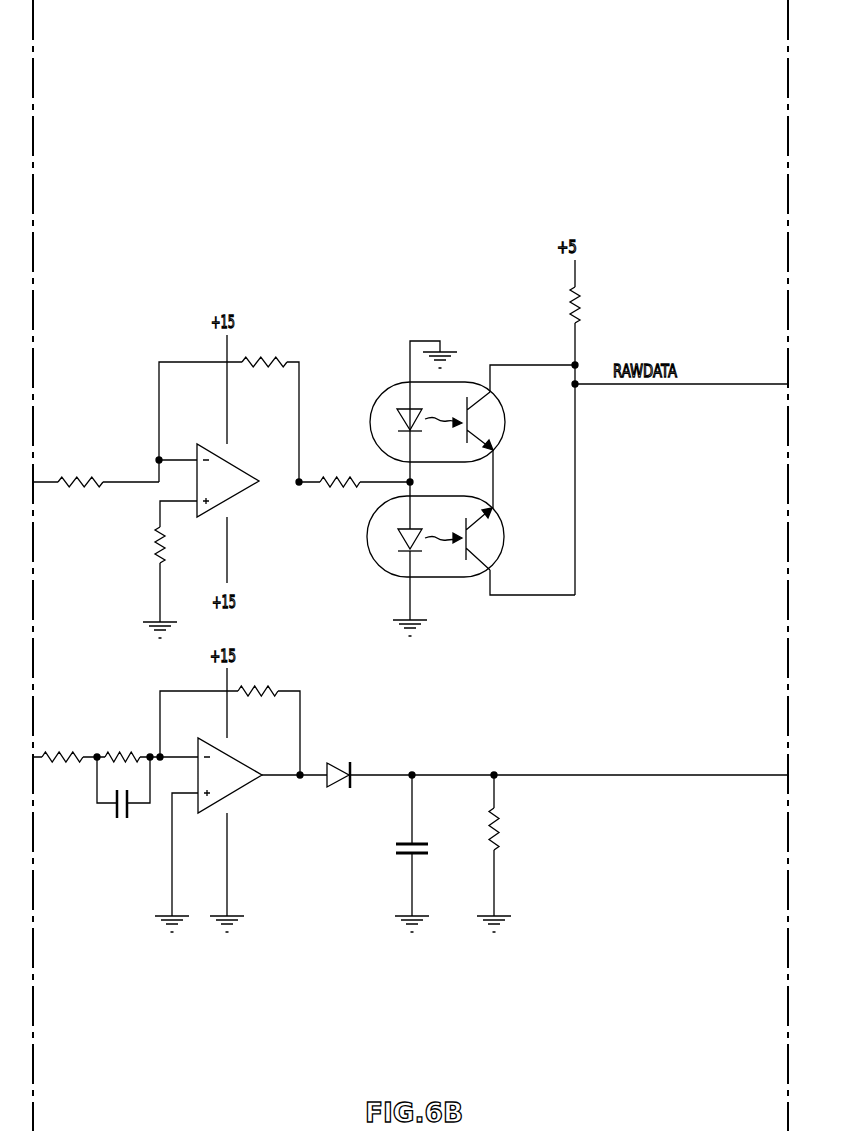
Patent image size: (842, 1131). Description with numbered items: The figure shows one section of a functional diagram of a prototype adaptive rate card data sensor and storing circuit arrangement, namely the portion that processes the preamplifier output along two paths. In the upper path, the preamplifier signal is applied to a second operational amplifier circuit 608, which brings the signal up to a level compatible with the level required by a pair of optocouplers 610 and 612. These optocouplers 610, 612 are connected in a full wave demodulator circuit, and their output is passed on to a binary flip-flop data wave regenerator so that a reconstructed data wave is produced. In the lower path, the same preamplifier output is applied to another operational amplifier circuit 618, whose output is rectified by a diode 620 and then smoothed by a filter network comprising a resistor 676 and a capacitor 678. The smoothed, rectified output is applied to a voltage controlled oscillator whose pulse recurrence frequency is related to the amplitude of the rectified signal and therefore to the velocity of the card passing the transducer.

The second operational amplifier circuit 608 is at (232, 499).
The optocoupler 610 is at (382, 393).
The optocoupler 612 is at (372, 555).
The operational amplifier circuit 618 is at (232, 792).
The diode 620 is at (341, 763).
The resistor 676 is at (500, 833).
The capacitor 678 is at (407, 843).